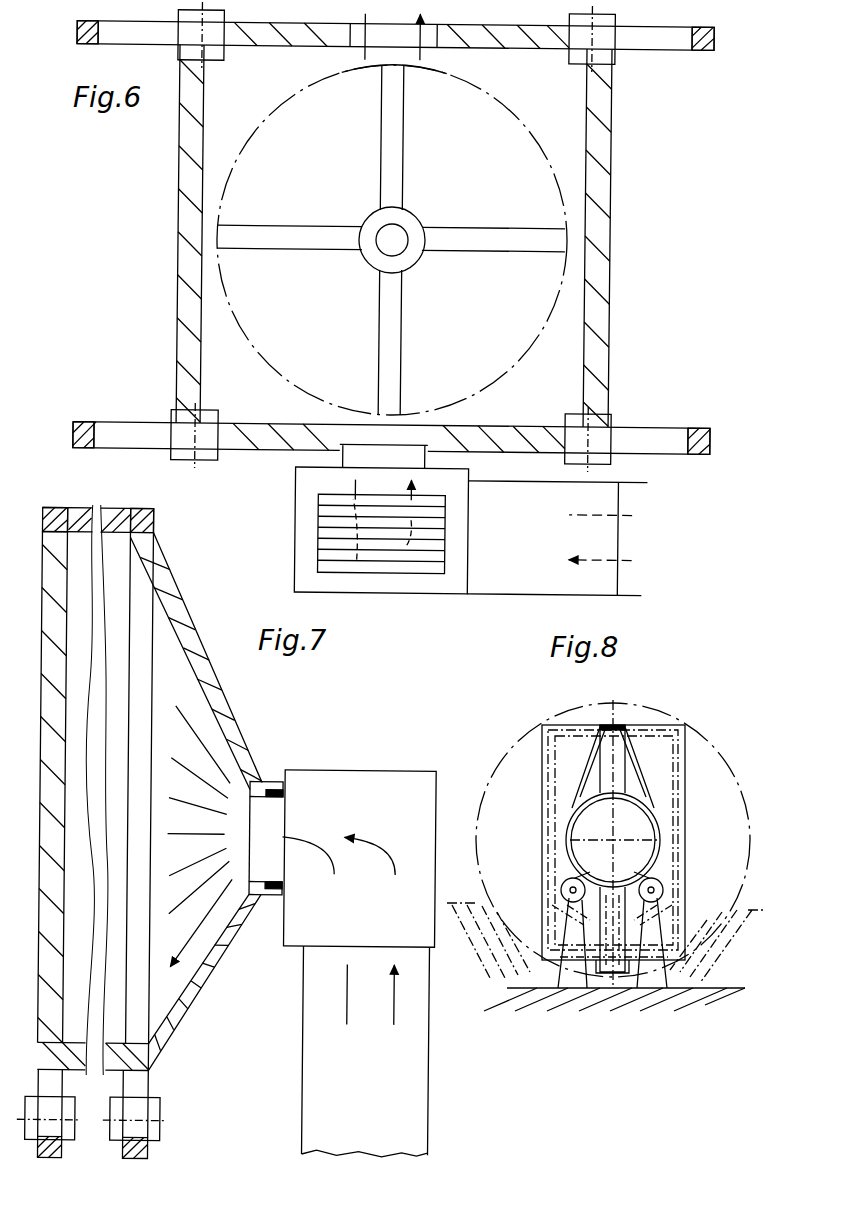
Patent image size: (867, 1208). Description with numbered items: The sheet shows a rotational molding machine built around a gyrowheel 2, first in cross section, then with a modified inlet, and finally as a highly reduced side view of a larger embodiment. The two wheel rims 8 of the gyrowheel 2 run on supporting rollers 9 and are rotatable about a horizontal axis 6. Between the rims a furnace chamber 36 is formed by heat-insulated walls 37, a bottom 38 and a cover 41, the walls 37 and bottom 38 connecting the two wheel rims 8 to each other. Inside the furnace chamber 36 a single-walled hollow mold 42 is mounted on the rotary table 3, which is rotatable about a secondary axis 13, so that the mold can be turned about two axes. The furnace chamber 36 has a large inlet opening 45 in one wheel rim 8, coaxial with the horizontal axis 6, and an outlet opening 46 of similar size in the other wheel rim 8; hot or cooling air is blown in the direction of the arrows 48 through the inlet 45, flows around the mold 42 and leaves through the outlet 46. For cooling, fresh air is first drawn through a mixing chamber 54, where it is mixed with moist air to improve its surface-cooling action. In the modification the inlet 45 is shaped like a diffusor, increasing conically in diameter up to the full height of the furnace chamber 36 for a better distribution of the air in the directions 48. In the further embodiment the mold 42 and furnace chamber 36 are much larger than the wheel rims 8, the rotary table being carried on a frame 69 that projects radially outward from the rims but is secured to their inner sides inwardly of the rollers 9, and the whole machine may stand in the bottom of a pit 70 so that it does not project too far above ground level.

In FIG. 8, the gyrowheel 2 is at (643, 834).
In FIG. 6, the rotary table 3 is at (467, 238).
In FIG. 8, the horizontal axis 6 is at (614, 841).
In FIG. 6, the wheel rims 8 is at (698, 50).
In FIG. 7, the wheel rims 8 is at (50, 508).
In FIG. 8, the wheel rims 8 is at (654, 818).
In FIG. 6, the supporting rollers 9 is at (613, 52).
In FIG. 7, the supporting rollers 9 is at (158, 1120).
In FIG. 8, the supporting rollers 9 is at (561, 888).
In FIG. 8, the secondary axis 13 is at (612, 911).
In FIG. 6, the furnace chamber 36 is at (513, 83).
In FIG. 7, the furnace chamber 36 is at (127, 647).
In FIG. 8, the furnace chamber 36 is at (673, 735).
In FIG. 6, the heat-insulated walls 37 is at (593, 92).
In FIG. 7, the heat-insulated walls 37 is at (57, 612).
In FIG. 7, the bottom 38 is at (116, 1058).
In FIG. 7, the cover 41 is at (114, 517).
In FIG. 6, the hollow mold 42 is at (461, 119).
In FIG. 8, the hollow mold 42 is at (676, 756).
In FIG. 6, the inlet opening 45 is at (352, 430).
In FIG. 7, the inlet opening 45 is at (264, 862).
In FIG. 6, the outlet opening 46 is at (383, 43).
In FIG. 7, the air flow direction 48 is at (200, 837).
In FIG. 6, the mixing chamber 54 is at (608, 538).
In FIG. 8, the frame 69 is at (610, 972).
In FIG. 8, the pit 70 is at (688, 975).